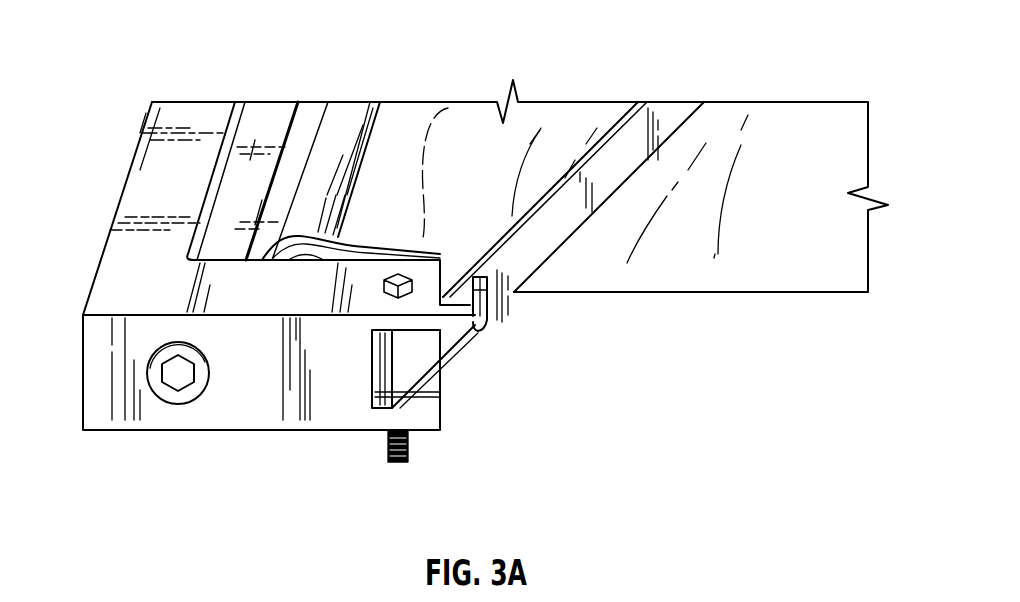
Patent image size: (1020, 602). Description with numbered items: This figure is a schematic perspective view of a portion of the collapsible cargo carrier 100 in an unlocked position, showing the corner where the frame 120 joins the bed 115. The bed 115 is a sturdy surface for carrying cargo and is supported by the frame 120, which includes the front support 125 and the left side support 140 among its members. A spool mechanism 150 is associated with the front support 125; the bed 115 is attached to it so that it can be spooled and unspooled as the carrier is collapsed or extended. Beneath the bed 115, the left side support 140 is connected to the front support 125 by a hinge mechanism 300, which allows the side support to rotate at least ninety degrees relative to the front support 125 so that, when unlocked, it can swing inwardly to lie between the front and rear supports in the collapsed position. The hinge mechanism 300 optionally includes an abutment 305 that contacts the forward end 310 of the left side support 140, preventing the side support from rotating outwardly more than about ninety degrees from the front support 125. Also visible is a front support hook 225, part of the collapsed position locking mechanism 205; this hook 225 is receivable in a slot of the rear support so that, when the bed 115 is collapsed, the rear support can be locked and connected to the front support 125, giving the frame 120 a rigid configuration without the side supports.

The collapsible cargo carrier 100 is at (845, 39).
The bed 115 is at (818, 150).
The frame 120 is at (101, 444).
The front support 125 is at (148, 196).
The left side support 140 is at (521, 265).
The spool mechanism 150 is at (345, 78).
The collapsed position locking mechanism 205 is at (400, 416).
The front support hook 225 is at (480, 333).
The hinge mechanism 300 is at (393, 477).
The abutment 305 is at (370, 363).
The forward end 310 is at (383, 404).